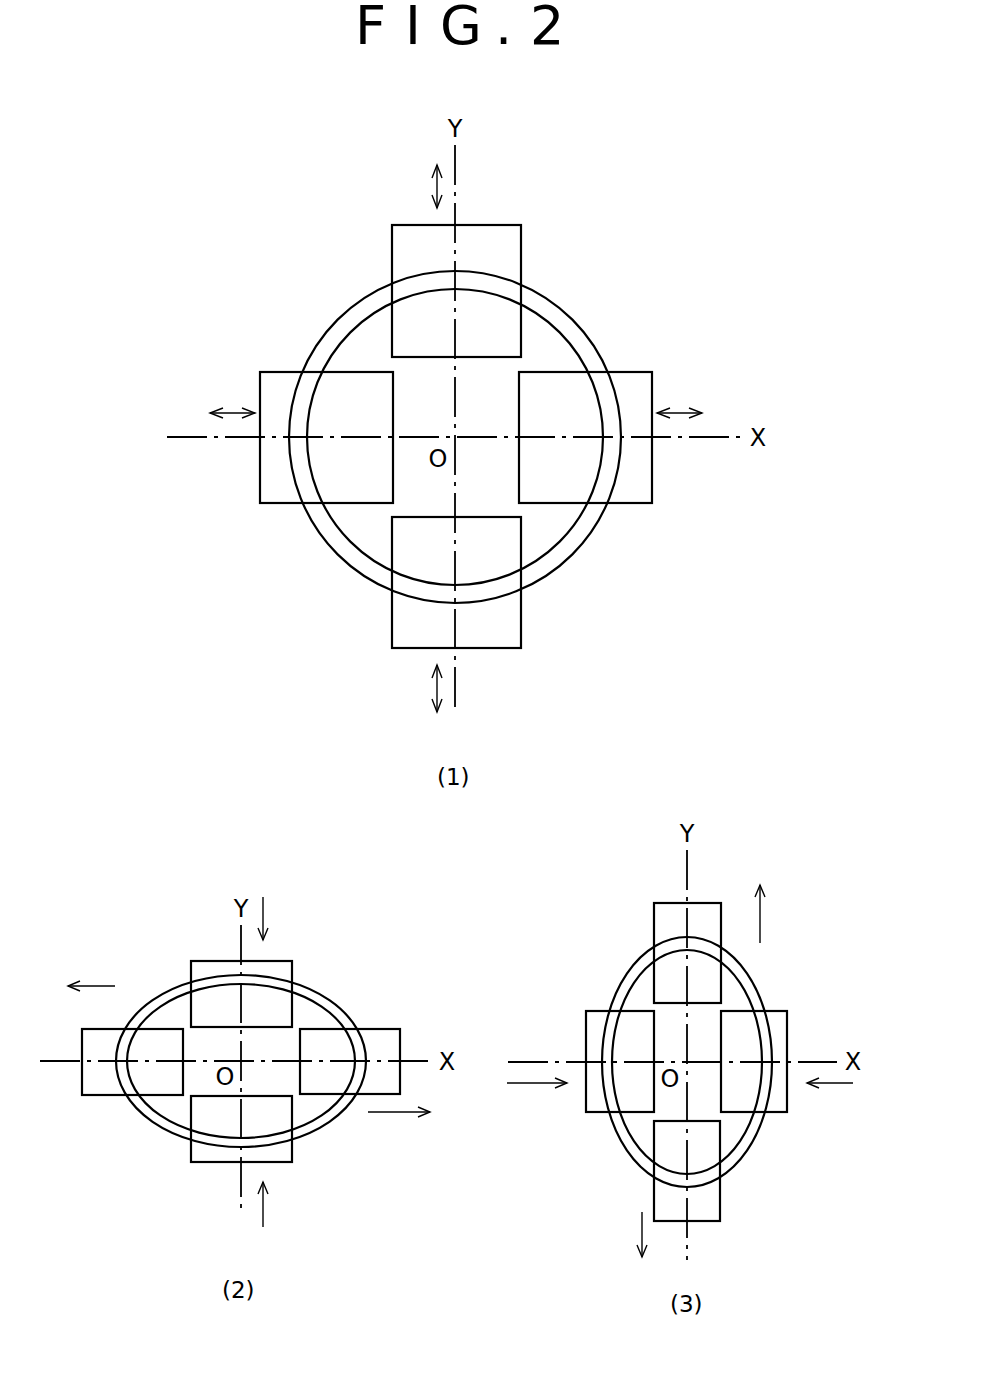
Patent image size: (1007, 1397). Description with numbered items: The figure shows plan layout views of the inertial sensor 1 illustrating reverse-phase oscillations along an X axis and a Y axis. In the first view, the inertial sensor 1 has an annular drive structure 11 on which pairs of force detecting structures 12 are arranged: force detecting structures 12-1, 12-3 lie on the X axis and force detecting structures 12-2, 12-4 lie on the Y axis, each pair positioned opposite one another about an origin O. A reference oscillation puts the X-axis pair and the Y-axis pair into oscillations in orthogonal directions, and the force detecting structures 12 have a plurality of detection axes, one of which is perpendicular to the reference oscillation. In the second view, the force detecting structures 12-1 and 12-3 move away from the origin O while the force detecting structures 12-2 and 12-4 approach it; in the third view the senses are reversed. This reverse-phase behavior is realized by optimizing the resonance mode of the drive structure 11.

The inertial sensor 1 is at (690, 250).
The drive structure 11 is at (585, 307).
The force detecting structures 12 is at (481, 717).
The force detecting structure 12-1 is at (628, 397).
The force detecting structure 12-2 is at (487, 613).
The force detecting structure 12-3 is at (280, 392).
The force detecting structure 12-4 is at (498, 262).